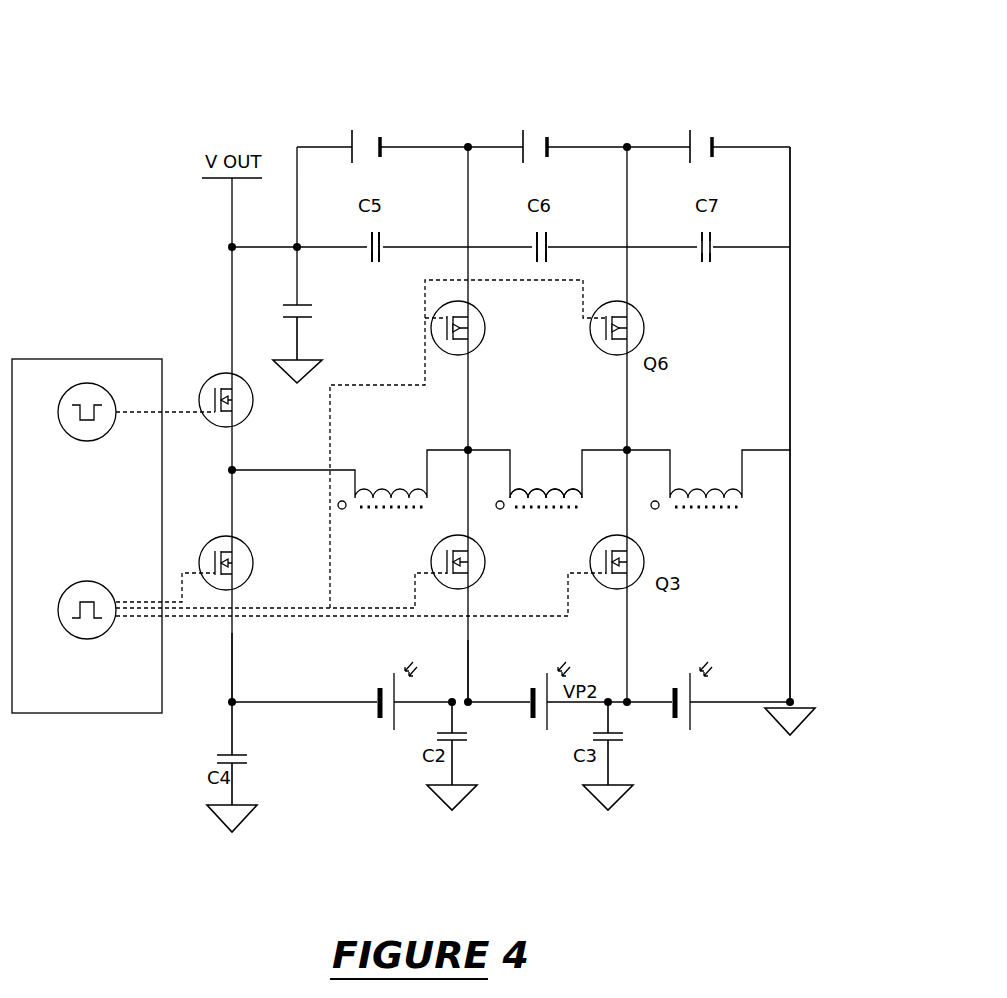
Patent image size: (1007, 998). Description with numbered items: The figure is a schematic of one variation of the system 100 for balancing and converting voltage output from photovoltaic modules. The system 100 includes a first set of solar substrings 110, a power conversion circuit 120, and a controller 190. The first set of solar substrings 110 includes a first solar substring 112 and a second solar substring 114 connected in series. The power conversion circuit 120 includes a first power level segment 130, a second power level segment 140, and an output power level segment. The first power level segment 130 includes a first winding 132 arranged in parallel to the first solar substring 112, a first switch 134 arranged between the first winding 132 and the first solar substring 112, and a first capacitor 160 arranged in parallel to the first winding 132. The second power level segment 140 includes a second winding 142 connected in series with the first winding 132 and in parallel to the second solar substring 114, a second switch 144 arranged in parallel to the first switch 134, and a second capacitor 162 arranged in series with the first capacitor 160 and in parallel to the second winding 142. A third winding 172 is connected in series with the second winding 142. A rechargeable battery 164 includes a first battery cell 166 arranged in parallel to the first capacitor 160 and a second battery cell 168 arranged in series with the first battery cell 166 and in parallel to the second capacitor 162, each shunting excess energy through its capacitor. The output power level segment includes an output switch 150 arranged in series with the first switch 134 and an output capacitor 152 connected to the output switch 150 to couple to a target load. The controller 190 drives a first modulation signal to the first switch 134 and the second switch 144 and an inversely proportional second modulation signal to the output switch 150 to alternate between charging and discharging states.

The system 100 is at (148, 70).
The first set of solar substrings 110 is at (690, 730).
The first solar substring 112 is at (394, 730).
The second solar substring 114 is at (547, 730).
The power conversion circuit 120 is at (790, 290).
The first power level segment 130 is at (237, 633).
The first winding 132 is at (358, 510).
The first switch 134 is at (222, 537).
The second power level segment 140 is at (460, 656).
The second winding 142 is at (545, 495).
The second switch 144 is at (470, 586).
The output switch 150 is at (218, 373).
The output capacitor 152 is at (361, 448).
The first capacitor 160 is at (381, 236).
The second capacitor 162 is at (547, 236).
The rechargeable battery 164 is at (733, 140).
The first battery cell 166 is at (370, 140).
The second battery cell 168 is at (538, 140).
The third winding 172 is at (485, 331).
The controller 190 is at (117, 358).